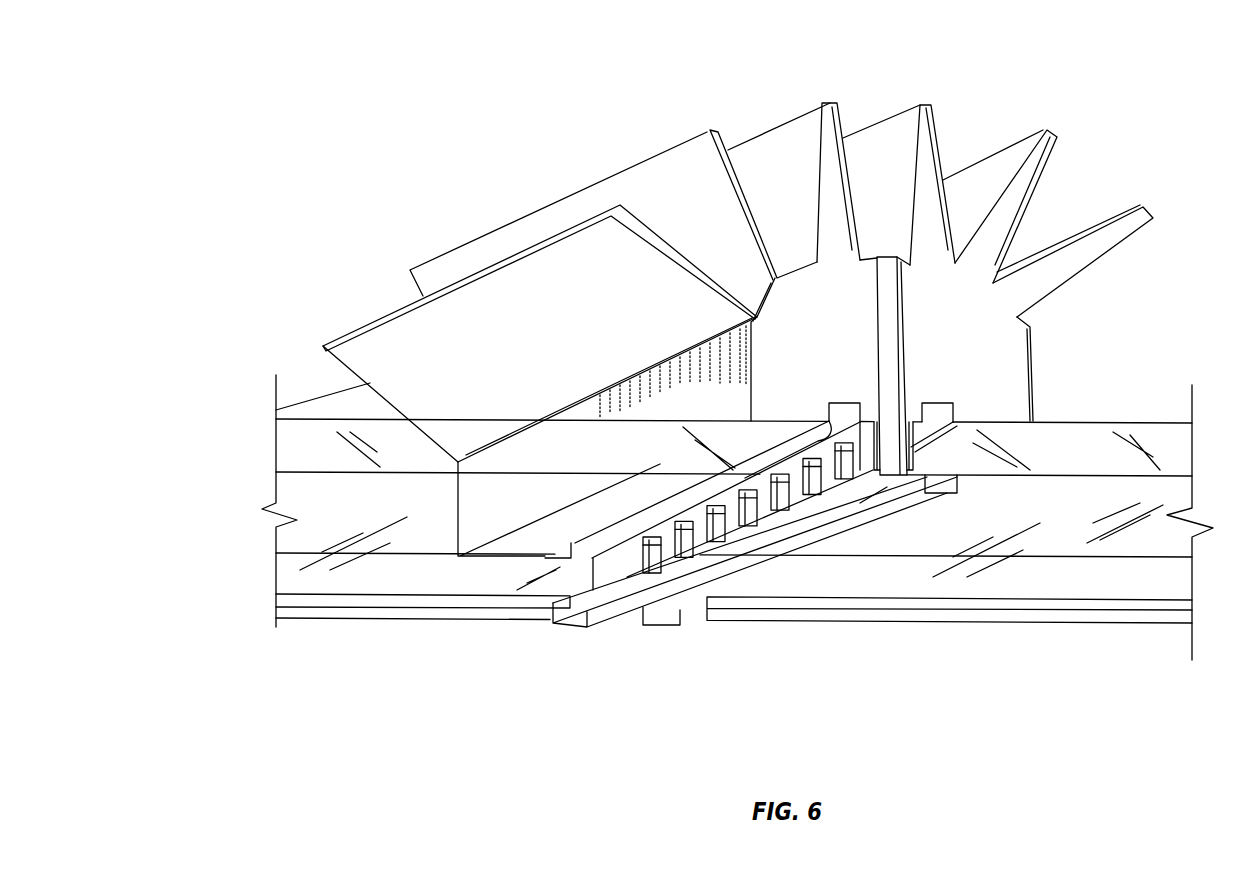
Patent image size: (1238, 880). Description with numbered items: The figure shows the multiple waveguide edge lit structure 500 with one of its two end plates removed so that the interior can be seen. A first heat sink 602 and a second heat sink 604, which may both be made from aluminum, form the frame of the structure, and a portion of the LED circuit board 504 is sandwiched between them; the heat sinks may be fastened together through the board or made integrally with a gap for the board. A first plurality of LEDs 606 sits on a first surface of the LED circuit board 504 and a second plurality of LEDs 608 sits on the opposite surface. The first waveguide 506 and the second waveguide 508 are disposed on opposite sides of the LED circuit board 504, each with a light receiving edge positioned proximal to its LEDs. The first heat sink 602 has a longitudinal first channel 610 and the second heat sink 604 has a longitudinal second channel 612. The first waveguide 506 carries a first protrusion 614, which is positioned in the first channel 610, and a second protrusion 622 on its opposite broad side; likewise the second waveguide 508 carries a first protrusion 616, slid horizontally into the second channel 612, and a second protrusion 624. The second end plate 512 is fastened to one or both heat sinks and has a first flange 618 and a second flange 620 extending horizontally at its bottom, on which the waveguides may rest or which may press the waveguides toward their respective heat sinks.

The multiple waveguide edge lit structure 500 is at (374, 66).
The LED circuit board 504 is at (889, 317).
The first waveguide 506 is at (284, 450).
The second waveguide 508 is at (1088, 435).
The second end plate 512 is at (310, 405).
The first heat sink 602 is at (838, 316).
The second heat sink 604 is at (1014, 352).
The first plurality of LEDs 606 is at (881, 468).
The second plurality of LEDs 608 is at (908, 410).
The first channel 610 is at (843, 403).
The second channel 612 is at (937, 402).
The first protrusion of the first waveguide 614 is at (818, 440).
The first protrusion of the second waveguide 616 is at (943, 492).
The first flange 618 is at (339, 617).
The second flange 620 is at (1098, 622).
The second protrusion of the first waveguide 622 is at (843, 483).
The second protrusion of the second waveguide 624 is at (938, 497).